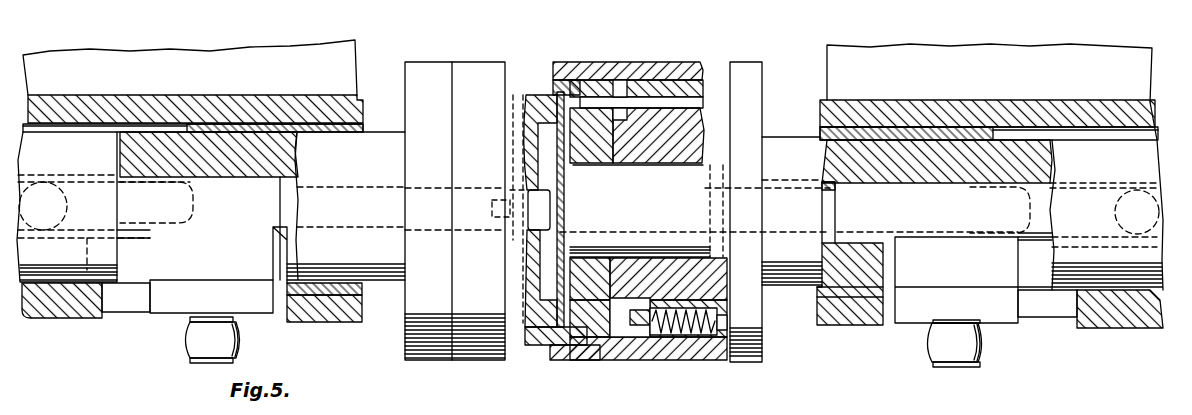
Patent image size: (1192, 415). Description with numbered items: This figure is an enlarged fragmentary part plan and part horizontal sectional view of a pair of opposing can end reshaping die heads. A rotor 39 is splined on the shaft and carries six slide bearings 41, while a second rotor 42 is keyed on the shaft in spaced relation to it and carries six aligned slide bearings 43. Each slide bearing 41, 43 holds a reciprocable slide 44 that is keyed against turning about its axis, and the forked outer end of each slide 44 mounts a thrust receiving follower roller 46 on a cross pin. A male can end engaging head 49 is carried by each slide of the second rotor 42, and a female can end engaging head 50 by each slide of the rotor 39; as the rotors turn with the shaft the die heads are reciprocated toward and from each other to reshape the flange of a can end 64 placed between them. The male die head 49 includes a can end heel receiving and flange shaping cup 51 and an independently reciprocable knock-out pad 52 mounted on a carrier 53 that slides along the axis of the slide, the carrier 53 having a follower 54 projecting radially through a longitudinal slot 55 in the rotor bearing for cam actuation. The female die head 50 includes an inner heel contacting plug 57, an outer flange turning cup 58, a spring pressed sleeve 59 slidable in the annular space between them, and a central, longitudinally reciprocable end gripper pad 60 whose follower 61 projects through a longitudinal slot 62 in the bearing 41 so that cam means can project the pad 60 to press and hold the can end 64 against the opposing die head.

The rotor 39 is at (840, 73).
The slide bearing 41 is at (962, 91).
The second rotor 42 is at (348, 57).
The slide bearing 43 is at (330, 97).
The slide 44 is at (235, 140).
The thrust receiving follower roller 46 is at (96, 192).
The male can end engaging head 49 is at (483, 361).
The female can end engaging head 50 is at (733, 362).
The can end heel receiving and flange shaping cup 51 is at (542, 347).
The knock-out pad 52 is at (537, 108).
The carrier 53 is at (268, 190).
The follower 54 is at (190, 345).
The longitudinal slot 55 is at (128, 302).
The inner heel contacting plug 57 is at (600, 153).
The outer flange turning cup 58 is at (563, 62).
The spring pressed sleeve 59 is at (613, 340).
The end gripper pad 60 is at (573, 232).
The follower 61 is at (987, 357).
The longitudinal slot 62 is at (1047, 305).
The can end 64 is at (555, 150).